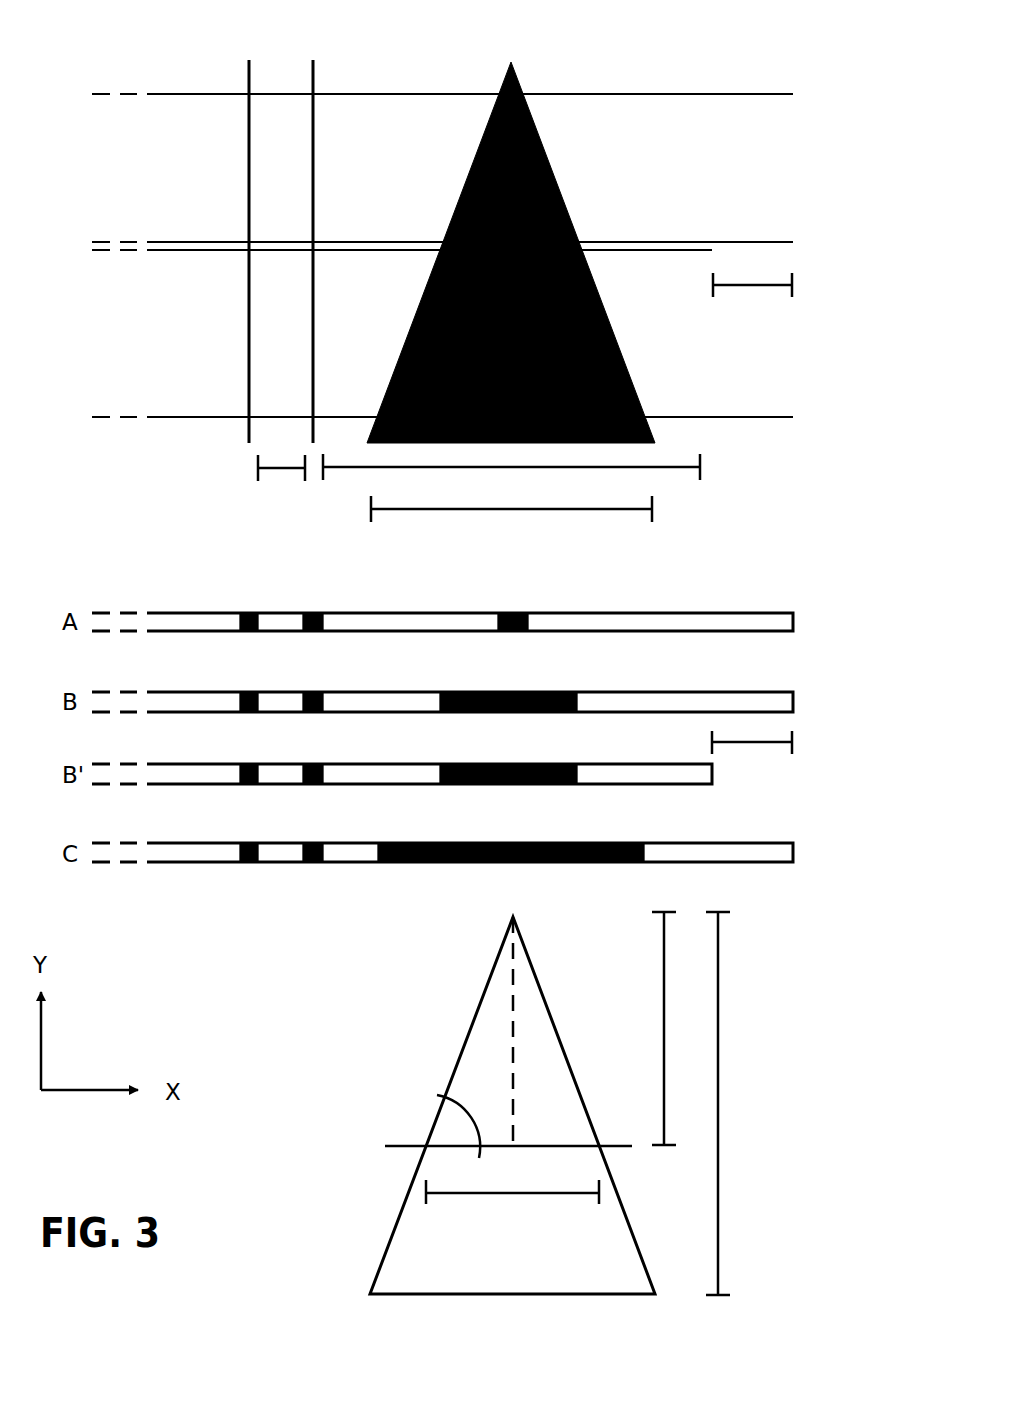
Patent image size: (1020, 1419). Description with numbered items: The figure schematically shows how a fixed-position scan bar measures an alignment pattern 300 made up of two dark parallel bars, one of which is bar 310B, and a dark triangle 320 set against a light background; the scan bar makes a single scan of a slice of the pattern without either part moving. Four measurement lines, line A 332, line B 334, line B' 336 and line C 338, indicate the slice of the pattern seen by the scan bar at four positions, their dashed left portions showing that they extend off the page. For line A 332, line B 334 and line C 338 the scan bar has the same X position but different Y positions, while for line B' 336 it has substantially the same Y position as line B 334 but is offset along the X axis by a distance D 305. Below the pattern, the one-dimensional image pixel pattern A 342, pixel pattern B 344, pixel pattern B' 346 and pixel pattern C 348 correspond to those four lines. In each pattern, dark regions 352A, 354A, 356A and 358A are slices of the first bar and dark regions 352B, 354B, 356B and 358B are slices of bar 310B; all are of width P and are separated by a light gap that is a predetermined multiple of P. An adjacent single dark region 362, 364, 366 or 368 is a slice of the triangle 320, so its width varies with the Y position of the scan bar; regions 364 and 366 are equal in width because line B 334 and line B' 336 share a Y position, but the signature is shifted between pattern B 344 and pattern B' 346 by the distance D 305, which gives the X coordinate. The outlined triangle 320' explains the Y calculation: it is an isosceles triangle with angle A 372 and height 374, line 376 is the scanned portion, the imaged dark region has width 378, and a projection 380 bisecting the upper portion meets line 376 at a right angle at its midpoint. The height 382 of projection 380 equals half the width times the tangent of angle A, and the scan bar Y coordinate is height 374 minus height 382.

The alignment pattern 300 is at (566, 50).
The distance D 305 is at (731, 285).
The bar 310B is at (244, 160).
The triangle 320 is at (511, 252).
The triangle (outlined) 320' is at (512, 1105).
The line A 332 is at (751, 94).
The line B 334 is at (761, 242).
The line B' 336 is at (210, 250).
The line C 338 is at (761, 417).
The pixel pattern A 342 is at (158, 596).
The pixel pattern B 344 is at (158, 676).
The pixel pattern B' 346 is at (158, 751).
The pixel pattern C 348 is at (158, 828).
The dark region 352A is at (250, 612).
The dark region 352B is at (313, 612).
The dark region 354A is at (250, 691).
The dark region 354B is at (313, 691).
The dark region 356A is at (250, 763).
The dark region 356B is at (313, 763).
The dark region 358A is at (250, 842).
The dark region 358B is at (313, 842).
The single dark region 362 is at (512, 612).
The single dark region 364 is at (510, 691).
The single dark region 366 is at (510, 763).
The single dark region 368 is at (510, 842).
The angle A 372 is at (410, 1119).
The height 374 is at (718, 970).
The line 376 is at (406, 1146).
The width 378 is at (552, 1193).
The projection 380 is at (511, 1033).
The height 382 is at (664, 970).